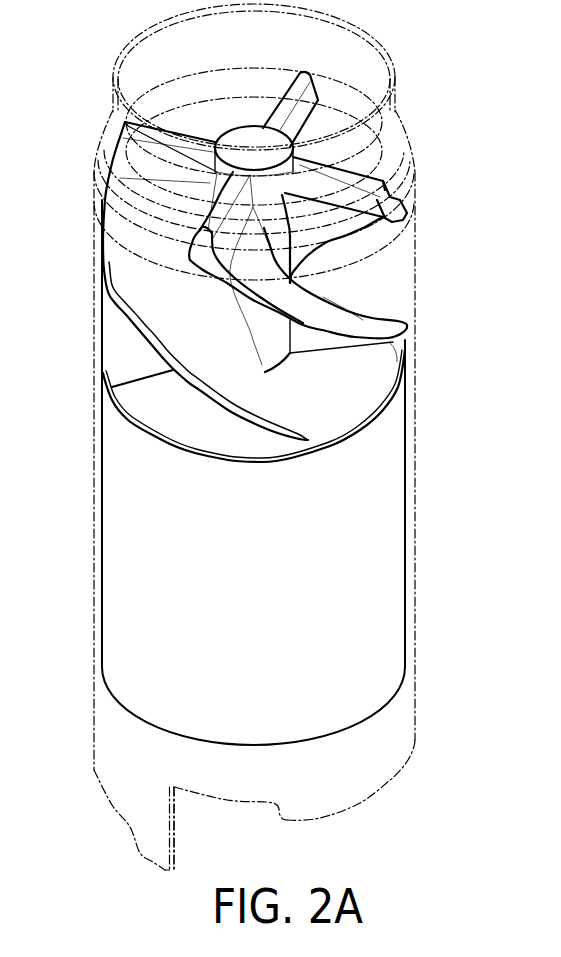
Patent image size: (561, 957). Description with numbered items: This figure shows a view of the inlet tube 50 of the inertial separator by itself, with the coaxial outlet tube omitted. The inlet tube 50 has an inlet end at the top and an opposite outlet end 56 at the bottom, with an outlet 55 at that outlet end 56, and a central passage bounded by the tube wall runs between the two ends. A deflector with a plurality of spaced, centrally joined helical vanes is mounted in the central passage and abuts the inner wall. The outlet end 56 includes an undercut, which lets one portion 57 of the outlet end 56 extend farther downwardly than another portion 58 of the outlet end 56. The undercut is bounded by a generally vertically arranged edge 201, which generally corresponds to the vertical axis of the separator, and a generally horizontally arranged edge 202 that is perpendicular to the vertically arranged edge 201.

The inlet tube 50 is at (72, 286).
The outlet 55 is at (403, 768).
The outlet end 56 is at (360, 803).
The portion of the outlet end 57 is at (104, 848).
The another portion of the outlet end 58 is at (228, 800).
The vertically arranged edge 201 is at (177, 823).
The horizontally arranged edge 202 is at (153, 867).